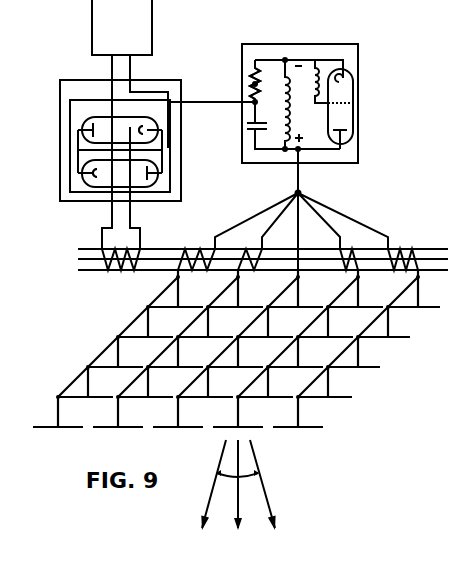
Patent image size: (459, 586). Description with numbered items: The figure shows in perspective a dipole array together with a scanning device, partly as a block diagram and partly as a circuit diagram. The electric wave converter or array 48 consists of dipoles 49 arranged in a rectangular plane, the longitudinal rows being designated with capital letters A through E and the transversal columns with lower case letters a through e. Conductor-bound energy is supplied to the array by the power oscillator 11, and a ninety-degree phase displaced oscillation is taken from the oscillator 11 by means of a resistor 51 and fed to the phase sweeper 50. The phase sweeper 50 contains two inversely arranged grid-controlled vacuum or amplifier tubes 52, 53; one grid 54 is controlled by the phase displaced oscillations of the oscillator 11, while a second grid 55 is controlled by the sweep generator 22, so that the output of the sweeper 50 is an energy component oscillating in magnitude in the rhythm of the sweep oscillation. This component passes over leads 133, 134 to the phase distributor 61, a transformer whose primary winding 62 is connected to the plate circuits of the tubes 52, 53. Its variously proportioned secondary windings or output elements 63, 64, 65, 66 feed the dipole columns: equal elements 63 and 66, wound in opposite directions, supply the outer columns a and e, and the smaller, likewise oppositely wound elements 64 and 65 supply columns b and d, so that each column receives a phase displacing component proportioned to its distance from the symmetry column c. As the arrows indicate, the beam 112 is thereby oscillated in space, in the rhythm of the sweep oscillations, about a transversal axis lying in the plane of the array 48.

The sweep generator 22 is at (112, 31).
The phase sweeper 50 is at (77, 89).
The resistor 51 is at (255, 84).
The grid controlled vacuum or amplifier tube 52 is at (141, 123).
The grid controlled vacuum or amplifier tube 53 is at (158, 168).
The grid 54 is at (128, 130).
The second grid 55 is at (110, 132).
The power oscillator 11 is at (346, 53).
The output lead 133 is at (335, 213).
The output lead 134 is at (301, 221).
The dipoles 49 is at (391, 290).
The phase distributor 61 is at (139, 269).
The primary winding 62 is at (107, 271).
The output element 63 is at (186, 251).
The output element 64 is at (259, 251).
The output element 65 is at (357, 250).
The output element 66 is at (408, 250).
The electric wave converter or array 48 is at (246, 358).
The beam 112 is at (273, 518).